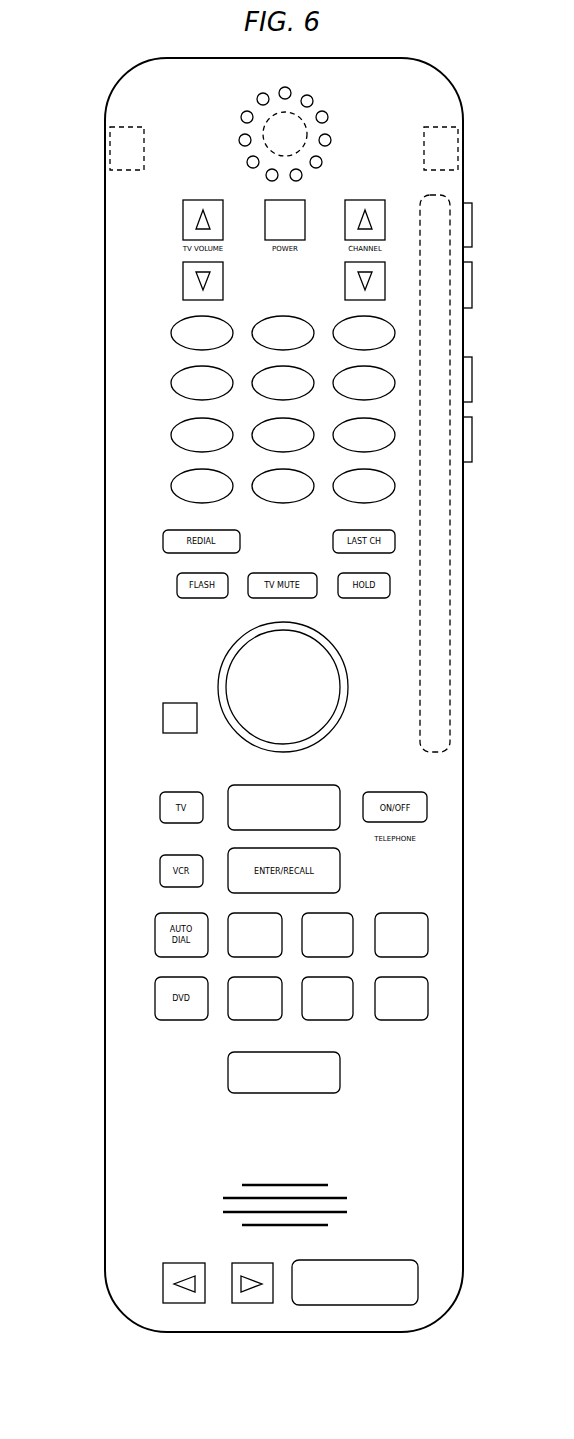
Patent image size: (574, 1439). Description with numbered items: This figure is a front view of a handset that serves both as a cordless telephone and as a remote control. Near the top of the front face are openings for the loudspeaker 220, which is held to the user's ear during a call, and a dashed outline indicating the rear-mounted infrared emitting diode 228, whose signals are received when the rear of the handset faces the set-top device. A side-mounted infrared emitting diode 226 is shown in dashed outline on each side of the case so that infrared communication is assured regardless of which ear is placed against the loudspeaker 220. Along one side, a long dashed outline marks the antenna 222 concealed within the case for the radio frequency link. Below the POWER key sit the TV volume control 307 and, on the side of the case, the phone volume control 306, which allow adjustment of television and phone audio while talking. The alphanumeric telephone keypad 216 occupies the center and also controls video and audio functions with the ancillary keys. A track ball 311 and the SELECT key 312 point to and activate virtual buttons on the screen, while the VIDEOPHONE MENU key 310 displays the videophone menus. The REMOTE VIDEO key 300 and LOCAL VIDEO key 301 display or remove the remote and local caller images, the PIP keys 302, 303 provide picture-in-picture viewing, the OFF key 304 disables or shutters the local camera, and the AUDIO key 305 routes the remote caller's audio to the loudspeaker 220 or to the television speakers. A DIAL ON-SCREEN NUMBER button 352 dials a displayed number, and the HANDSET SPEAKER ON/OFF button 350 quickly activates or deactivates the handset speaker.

The loudspeaker 220 is at (241, 114).
The infrared emitting diode 228 is at (296, 120).
The infrared emitting diode 226 is at (110, 171).
The TV volume control 307 is at (183, 220).
The phone volume control 306 is at (473, 375).
The antenna 222 is at (466, 509).
The alphanumeric telephone keypad 216 is at (92, 310).
The track ball 311 is at (219, 668).
The SELECT key 312 is at (163, 706).
The VIDEOPHONE MENU key 310 is at (318, 785).
The PIP key 302 is at (232, 913).
The OFF key 304 is at (338, 913).
The LOCAL VIDEO key 301 is at (428, 935).
The REMOTE VIDEO key 300 is at (428, 997).
The AUDIO key 305 is at (247, 1020).
The PIP key 303 is at (338, 1020).
The dial on-screen number button 352 is at (340, 1068).
The HANDSET SPEAKER ON/OFF button 350 is at (383, 1260).